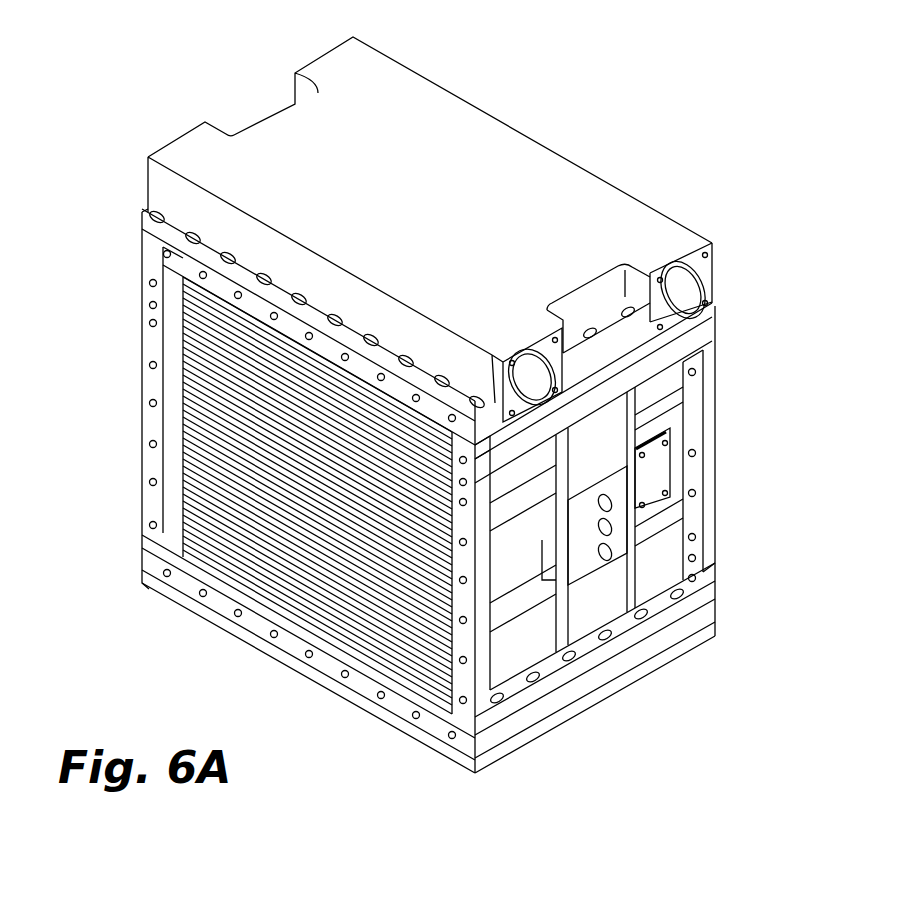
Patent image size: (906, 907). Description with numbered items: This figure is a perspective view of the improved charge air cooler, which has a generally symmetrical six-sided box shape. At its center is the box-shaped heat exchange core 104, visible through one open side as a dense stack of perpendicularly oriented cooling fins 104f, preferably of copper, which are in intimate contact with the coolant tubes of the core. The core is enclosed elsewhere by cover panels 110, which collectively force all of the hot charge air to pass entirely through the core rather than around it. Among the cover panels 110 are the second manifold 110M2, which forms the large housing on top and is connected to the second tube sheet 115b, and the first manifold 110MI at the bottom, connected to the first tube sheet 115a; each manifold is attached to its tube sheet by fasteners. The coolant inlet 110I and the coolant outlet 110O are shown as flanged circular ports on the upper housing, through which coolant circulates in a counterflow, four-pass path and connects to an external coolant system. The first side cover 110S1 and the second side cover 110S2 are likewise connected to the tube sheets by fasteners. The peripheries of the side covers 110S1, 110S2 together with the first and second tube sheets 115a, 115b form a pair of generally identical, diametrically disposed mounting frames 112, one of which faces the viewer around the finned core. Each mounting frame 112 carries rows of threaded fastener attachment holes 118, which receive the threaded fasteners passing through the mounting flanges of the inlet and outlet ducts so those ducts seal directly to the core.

The heat exchange core 104 is at (150, 603).
The cooling fins 104f is at (262, 533).
The cover panels 110 is at (595, 185).
The second manifold 110M2 is at (505, 140).
The first manifold 110MI is at (307, 690).
The coolant inlet 110I is at (538, 372).
The coolant outlet 110O is at (690, 272).
The first side cover 110S1 is at (675, 556).
The second side cover 110S2 is at (140, 378).
The mounting frame 112 is at (232, 613).
The first tube sheet 115a is at (152, 563).
The second tube sheet 115b is at (152, 243).
The threaded fastener attachment holes 118 is at (238, 293).